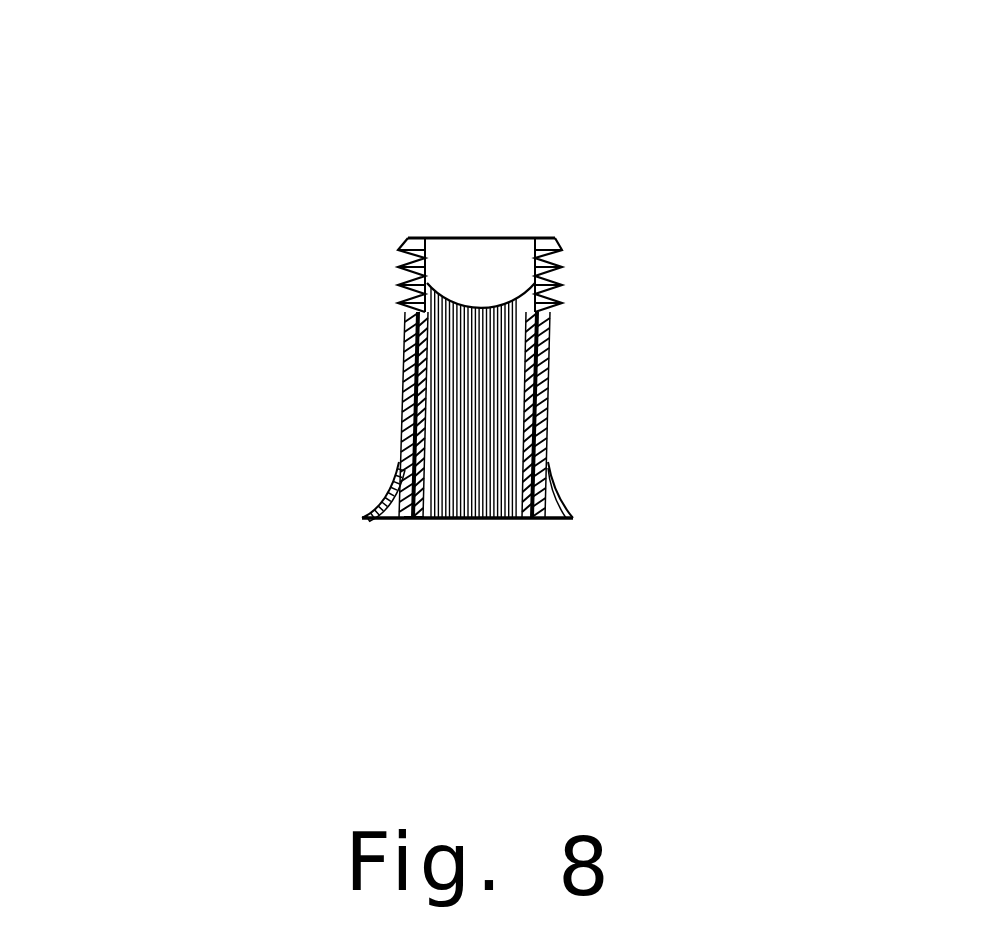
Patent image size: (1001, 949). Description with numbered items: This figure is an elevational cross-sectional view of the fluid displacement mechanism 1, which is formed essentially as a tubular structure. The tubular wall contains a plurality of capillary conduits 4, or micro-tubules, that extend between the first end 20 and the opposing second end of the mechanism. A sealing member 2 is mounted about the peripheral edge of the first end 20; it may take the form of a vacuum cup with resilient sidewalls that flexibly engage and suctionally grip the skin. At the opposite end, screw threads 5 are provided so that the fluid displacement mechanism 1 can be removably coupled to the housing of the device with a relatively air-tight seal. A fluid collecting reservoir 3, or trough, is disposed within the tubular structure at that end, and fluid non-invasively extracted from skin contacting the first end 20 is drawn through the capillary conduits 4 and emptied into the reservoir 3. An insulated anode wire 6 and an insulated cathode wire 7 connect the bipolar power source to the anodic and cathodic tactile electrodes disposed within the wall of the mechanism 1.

The fluid displacement mechanism 1 is at (545, 445).
The sealing member 2 is at (367, 515).
The fluid collecting reservoir 3 is at (478, 295).
The capillary conduits 4 is at (515, 375).
The screw threads 5 is at (398, 248).
The insulated anode wire 6 is at (527, 520).
The insulated cathode wire 7 is at (412, 520).
The first end 20 is at (473, 520).